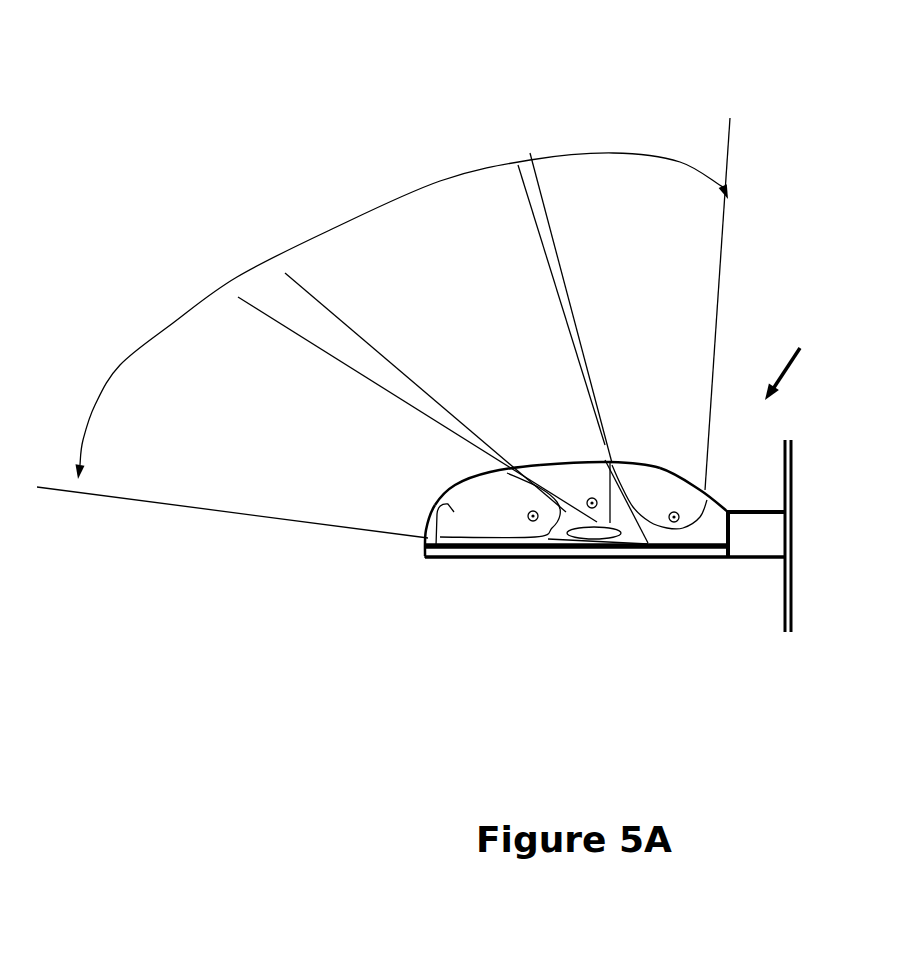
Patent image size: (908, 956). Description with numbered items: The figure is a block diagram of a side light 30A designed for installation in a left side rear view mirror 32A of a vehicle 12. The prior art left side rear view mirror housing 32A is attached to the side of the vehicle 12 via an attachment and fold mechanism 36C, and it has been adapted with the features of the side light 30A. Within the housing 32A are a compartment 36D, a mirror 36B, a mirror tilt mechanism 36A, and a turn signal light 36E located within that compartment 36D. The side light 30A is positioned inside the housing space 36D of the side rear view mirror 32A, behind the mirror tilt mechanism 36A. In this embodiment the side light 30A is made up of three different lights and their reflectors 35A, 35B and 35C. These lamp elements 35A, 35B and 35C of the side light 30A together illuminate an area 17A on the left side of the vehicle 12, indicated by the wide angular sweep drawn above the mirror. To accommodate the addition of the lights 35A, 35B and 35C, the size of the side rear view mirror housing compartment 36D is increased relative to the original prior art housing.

The illuminated area 17A is at (372, 198).
The side light 30A is at (807, 374).
The vehicle 12 is at (797, 484).
The side rear view mirror housing 32A is at (466, 562).
The lamp element 35A is at (478, 496).
The lamp element 35B is at (569, 482).
The lamp element 35C is at (650, 488).
The mirror tilt mechanism 36A is at (620, 545).
The mirror 36B is at (686, 552).
The attachment and fold mechanism 36C is at (746, 556).
The compartment 36D is at (712, 517).
The turn signal light 36E is at (418, 550).